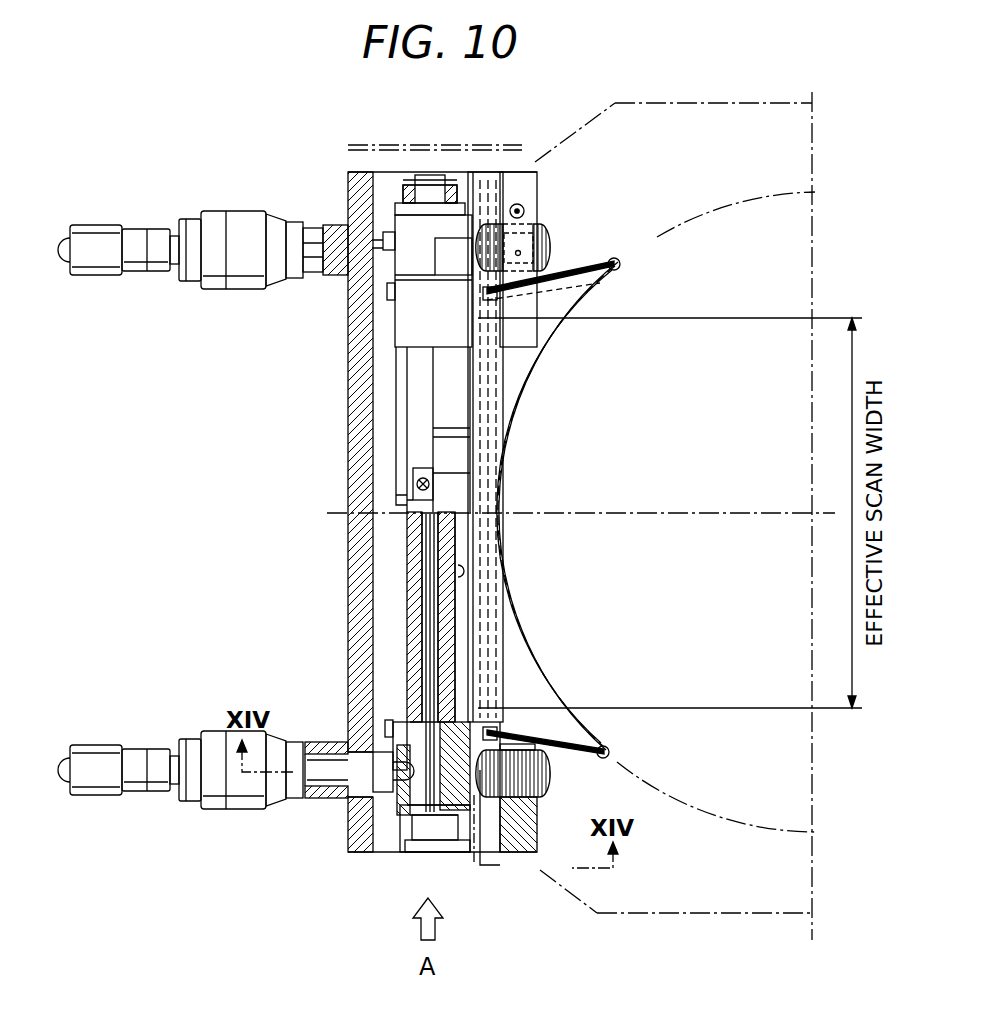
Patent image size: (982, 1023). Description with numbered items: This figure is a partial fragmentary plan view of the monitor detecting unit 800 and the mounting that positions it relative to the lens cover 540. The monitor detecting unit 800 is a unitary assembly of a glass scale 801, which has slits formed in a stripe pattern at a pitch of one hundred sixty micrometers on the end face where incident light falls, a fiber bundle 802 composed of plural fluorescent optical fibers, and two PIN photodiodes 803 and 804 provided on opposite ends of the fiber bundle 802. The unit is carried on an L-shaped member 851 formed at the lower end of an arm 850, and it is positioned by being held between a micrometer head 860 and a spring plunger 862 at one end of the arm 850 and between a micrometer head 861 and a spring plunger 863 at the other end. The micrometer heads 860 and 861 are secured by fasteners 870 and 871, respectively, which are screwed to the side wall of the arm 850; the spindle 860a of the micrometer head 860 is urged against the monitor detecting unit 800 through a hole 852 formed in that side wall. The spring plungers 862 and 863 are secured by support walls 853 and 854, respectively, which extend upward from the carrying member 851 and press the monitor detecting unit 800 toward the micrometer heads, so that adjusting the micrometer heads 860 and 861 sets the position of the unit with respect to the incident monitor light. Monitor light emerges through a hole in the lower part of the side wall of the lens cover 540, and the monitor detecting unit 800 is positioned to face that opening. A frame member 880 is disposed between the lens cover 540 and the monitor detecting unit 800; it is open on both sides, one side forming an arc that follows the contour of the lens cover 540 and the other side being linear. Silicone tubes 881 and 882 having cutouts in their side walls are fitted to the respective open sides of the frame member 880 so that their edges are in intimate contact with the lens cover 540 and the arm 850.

The lens cover 540 is at (727, 830).
The monitor detecting unit 800 is at (390, 459).
The glass scale 801 is at (430, 578).
The fiber bundle 802 is at (428, 628).
The PIN photodiode 803 is at (432, 830).
The PIN photodiode 804 is at (428, 192).
The arm 850 is at (340, 533).
The L-shaped member 851 is at (466, 848).
The hole 852 is at (340, 820).
The support wall 853 is at (512, 848).
The support wall 854 is at (520, 197).
The micrometer head 860 is at (262, 735).
The spindle 860a is at (372, 838).
The micrometer head 861 is at (248, 235).
The spring plunger 862 is at (578, 790).
The spring plunger 863 is at (548, 240).
The fastener 870 is at (313, 745).
The fastener 871 is at (335, 262).
The frame member 880 is at (568, 288).
The silicone tube 881 is at (620, 264).
The silicone tube 882 is at (497, 292).